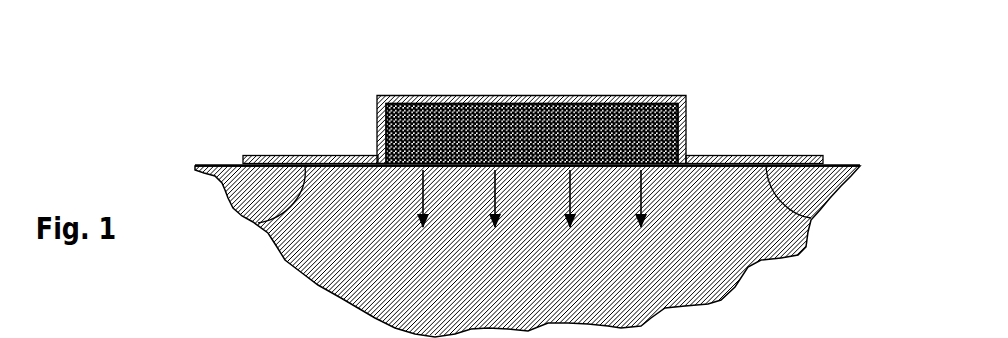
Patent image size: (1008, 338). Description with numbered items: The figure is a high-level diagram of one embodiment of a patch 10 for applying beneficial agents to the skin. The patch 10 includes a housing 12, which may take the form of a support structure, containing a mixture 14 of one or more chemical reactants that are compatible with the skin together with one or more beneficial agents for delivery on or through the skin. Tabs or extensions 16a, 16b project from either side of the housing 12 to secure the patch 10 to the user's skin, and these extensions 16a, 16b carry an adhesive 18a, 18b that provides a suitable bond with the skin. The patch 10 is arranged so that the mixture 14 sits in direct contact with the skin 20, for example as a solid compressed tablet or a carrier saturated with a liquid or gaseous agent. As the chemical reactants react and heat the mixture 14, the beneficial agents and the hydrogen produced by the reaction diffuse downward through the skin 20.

The patch 10 is at (530, 91).
The housing 12 is at (628, 90).
The mixture 14 is at (655, 122).
The extension 16a is at (268, 147).
The extension 16b is at (778, 152).
The adhesive 18a is at (250, 215).
The adhesive 18b is at (803, 210).
The skin 20 is at (527, 252).